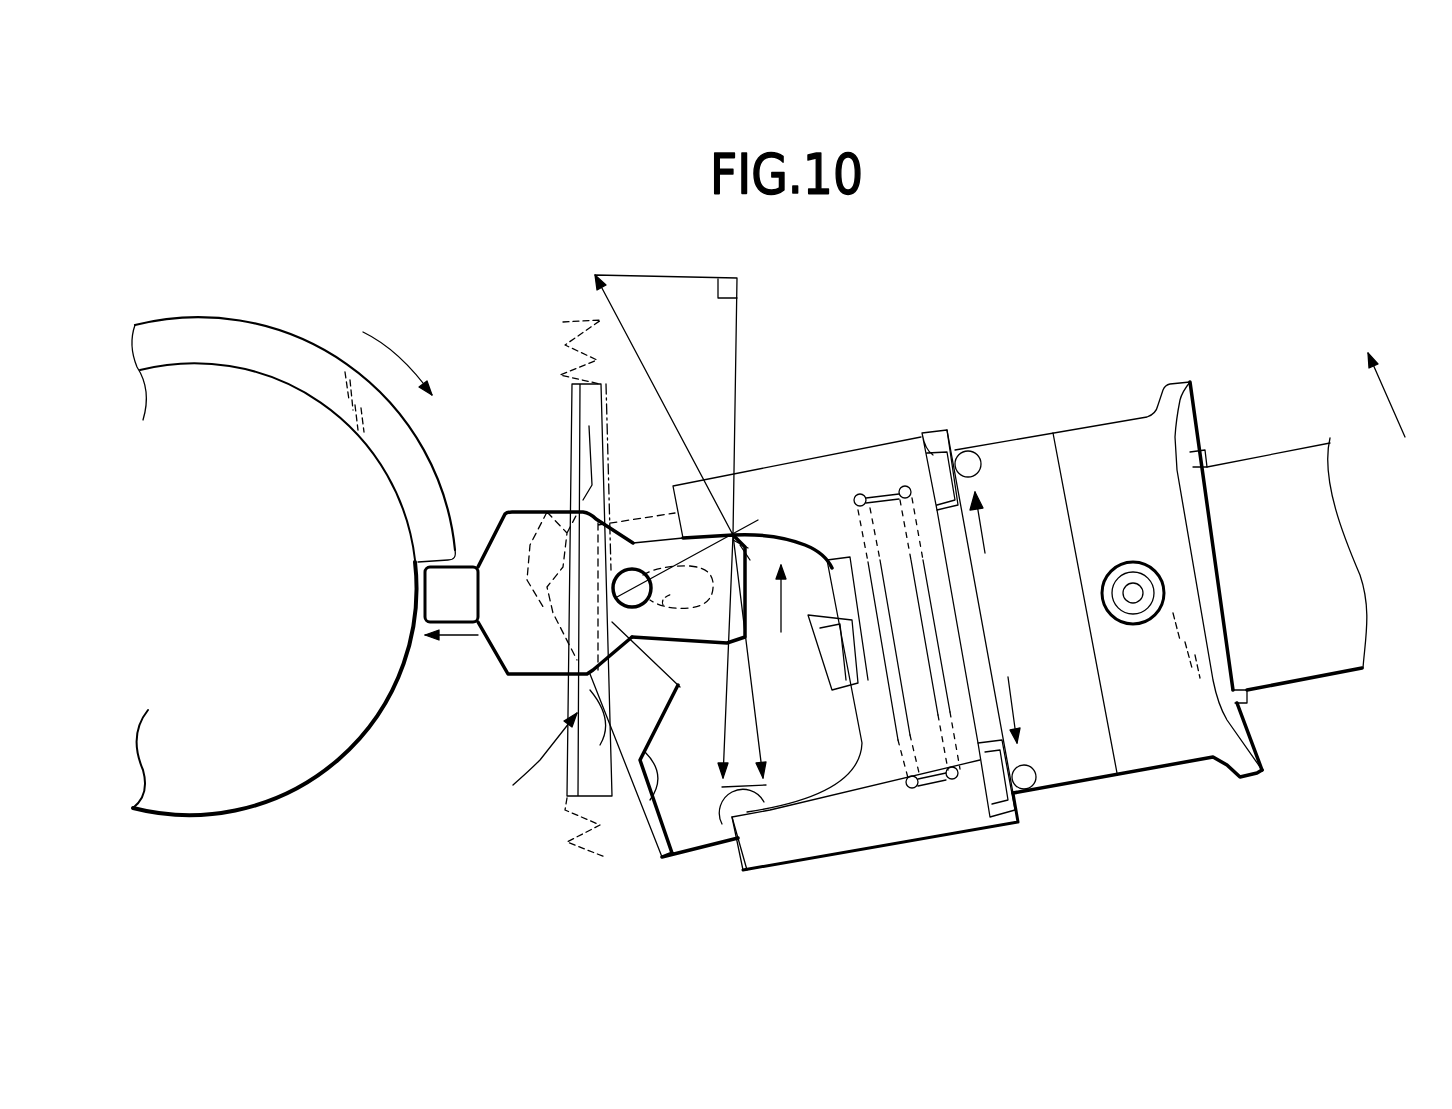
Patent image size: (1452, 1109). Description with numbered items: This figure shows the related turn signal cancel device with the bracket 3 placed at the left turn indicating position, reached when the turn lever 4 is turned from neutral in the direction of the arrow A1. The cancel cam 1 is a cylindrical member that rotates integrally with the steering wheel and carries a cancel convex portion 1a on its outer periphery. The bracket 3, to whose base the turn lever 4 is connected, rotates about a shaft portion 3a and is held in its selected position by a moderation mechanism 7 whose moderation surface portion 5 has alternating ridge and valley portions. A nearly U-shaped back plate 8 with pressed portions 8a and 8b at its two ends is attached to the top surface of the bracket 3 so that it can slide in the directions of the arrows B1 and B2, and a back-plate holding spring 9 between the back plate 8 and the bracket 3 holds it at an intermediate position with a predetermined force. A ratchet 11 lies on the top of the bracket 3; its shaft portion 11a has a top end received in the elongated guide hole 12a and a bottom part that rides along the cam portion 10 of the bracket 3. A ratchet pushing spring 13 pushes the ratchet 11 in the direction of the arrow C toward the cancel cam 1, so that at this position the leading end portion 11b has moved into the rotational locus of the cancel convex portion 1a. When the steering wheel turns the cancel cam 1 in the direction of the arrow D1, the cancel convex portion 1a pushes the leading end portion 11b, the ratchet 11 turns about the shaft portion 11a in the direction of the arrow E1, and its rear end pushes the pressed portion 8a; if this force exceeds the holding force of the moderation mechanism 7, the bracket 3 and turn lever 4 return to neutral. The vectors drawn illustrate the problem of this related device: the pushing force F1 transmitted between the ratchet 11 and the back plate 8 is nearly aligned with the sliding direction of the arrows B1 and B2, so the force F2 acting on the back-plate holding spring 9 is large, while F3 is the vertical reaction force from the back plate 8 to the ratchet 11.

The cancel cam 1 is at (295, 390).
The cancel convex portion 1a is at (272, 342).
The bracket 3 is at (1108, 577).
The shaft portion 3a is at (1133, 562).
The turn lever 4 is at (1287, 455).
The moderation surface portion 5 is at (547, 512).
The moderation mechanism 7 is at (576, 751).
The back plate 8 is at (854, 623).
The pressed portion 8a is at (780, 540).
The pressed portion 8b is at (730, 827).
The back-plate holding spring 9 is at (883, 773).
The cam portion 10 is at (640, 800).
The ratchet 11 is at (487, 653).
The shaft portion 11a is at (632, 568).
The leading end portion 11b is at (430, 593).
The guide hole 12a is at (685, 600).
The ratchet pushing spring 13 is at (569, 437).
The arrow A1 is at (1393, 393).
The arrow B1 is at (982, 533).
The arrow B2 is at (1010, 695).
The arrow C is at (457, 638).
The arrow D1 is at (400, 360).
The arrow E1 is at (781, 600).
The vector F1 is at (647, 363).
The vector F2 is at (762, 730).
The vector F3 is at (722, 740).